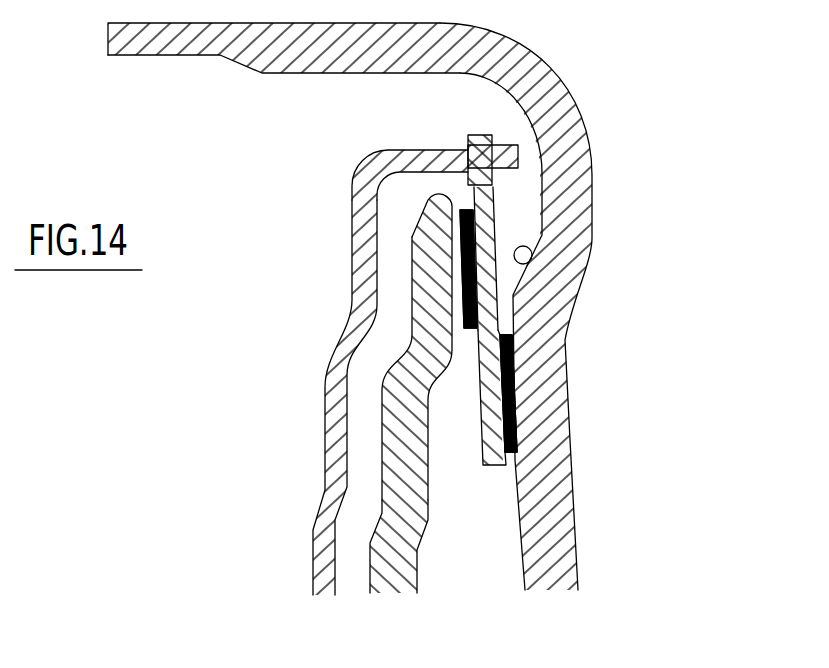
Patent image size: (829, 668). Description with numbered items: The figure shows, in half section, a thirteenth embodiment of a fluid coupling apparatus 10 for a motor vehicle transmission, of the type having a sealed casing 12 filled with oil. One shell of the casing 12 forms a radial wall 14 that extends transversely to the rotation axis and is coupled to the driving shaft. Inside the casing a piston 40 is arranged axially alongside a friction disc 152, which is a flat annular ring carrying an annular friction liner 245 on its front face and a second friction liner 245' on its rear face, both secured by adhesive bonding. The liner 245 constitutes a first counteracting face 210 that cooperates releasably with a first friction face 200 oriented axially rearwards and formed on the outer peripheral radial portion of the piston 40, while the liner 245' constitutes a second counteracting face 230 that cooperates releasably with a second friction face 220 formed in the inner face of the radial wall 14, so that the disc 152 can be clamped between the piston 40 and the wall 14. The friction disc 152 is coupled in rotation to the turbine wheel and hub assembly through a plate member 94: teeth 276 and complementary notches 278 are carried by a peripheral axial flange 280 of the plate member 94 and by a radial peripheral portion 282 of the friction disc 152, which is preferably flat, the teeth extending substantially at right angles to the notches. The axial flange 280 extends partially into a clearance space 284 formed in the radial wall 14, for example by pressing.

The fluid coupling apparatus 10 is at (630, 82).
The sealed casing 12 is at (174, 52).
The radial wall 14 is at (565, 522).
The piston 40 is at (385, 562).
The plate member 94 is at (333, 508).
The friction disc 152 is at (492, 426).
The first friction face 200 is at (452, 293).
The first counteracting face 210 is at (462, 260).
The second friction face 220 is at (522, 415).
The second counteracting face 230 is at (512, 353).
The friction liner 245 is at (363, 256).
The friction liner 245' is at (592, 393).
The teeth 276 is at (503, 155).
The complementary notches 278 is at (483, 152).
The peripheral axial flange 280 is at (400, 163).
The radial peripheral portion 282 is at (483, 205).
The clearance space 284 is at (523, 266).